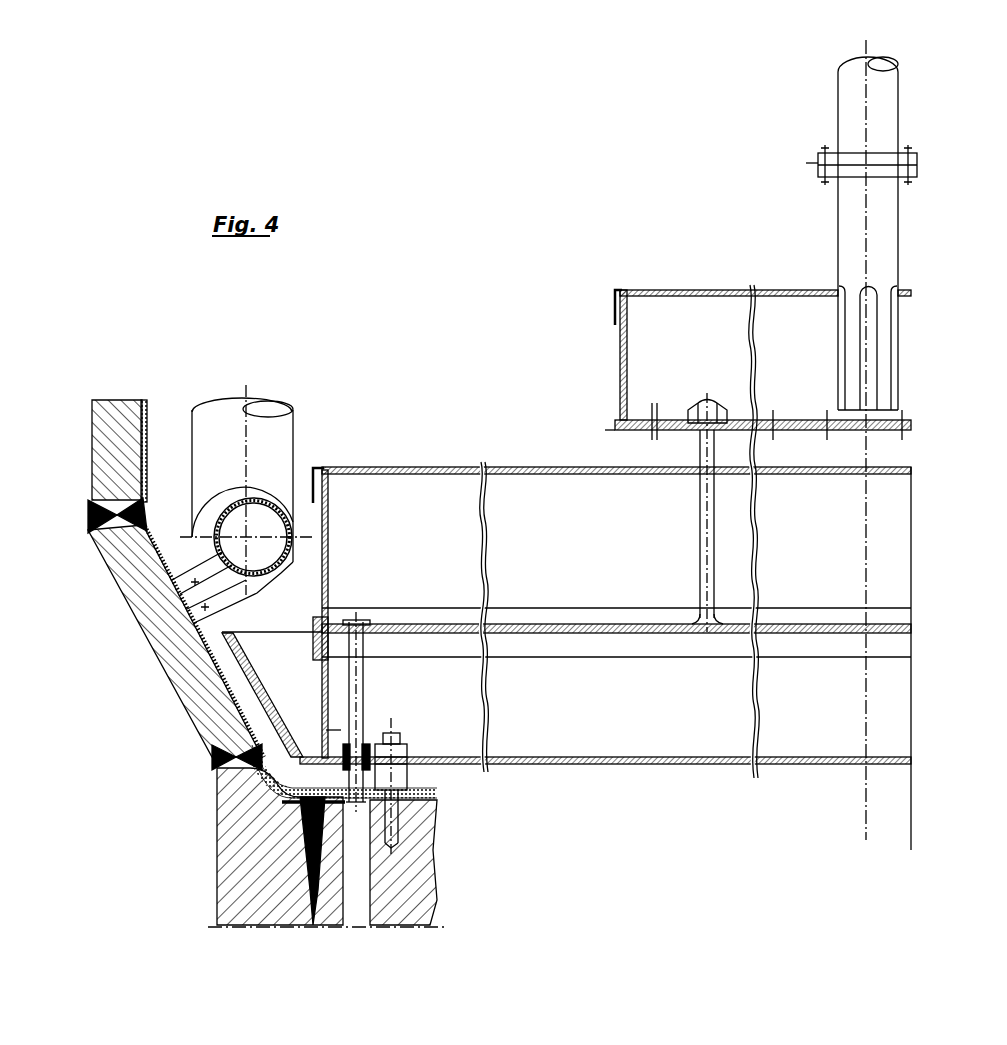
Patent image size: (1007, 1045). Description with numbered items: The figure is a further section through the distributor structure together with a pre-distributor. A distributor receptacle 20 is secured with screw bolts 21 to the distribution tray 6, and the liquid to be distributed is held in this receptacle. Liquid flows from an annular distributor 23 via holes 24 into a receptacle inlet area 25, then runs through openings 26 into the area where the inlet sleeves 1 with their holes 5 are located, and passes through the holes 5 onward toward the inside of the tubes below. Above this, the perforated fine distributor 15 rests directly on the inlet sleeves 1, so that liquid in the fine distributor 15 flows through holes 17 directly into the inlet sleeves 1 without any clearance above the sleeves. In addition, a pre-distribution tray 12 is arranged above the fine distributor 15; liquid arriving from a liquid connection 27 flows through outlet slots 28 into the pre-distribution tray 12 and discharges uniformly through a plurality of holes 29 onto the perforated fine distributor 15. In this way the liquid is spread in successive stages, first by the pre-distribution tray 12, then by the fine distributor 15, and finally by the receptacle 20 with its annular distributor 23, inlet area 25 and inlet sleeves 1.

The inlet sleeves 1 is at (368, 651).
The holes 5 is at (368, 737).
The distribution tray 6 is at (431, 793).
The pre-distribution tray 12 is at (790, 430).
The fine distributor 15 is at (557, 626).
The holes 17 is at (355, 626).
The distributor receptacle 20 is at (540, 757).
The screw bolts 21 is at (397, 826).
The annular distributor 23 is at (286, 556).
The holes 24 is at (252, 575).
The receptacle inlet area 25 is at (272, 694).
The openings 26 is at (328, 743).
The liquid connection 27 is at (883, 272).
The outlet slots 28 is at (878, 395).
The holes 29 is at (651, 432).